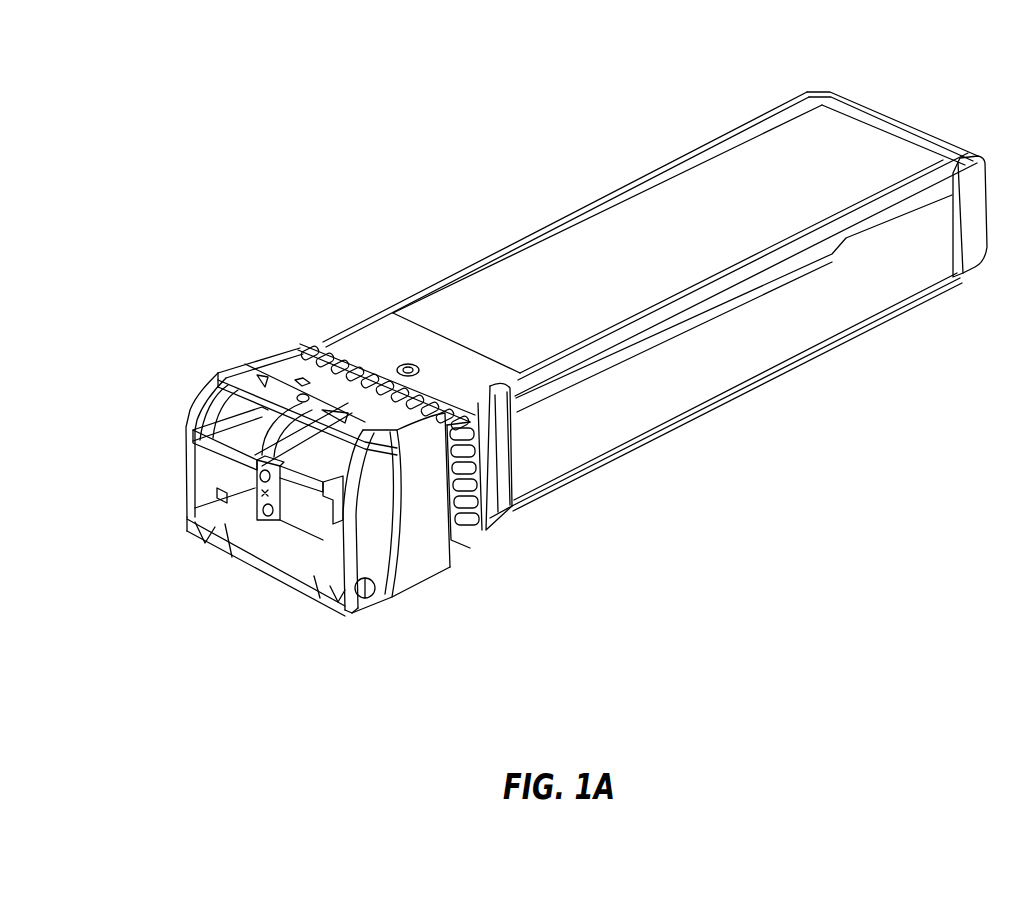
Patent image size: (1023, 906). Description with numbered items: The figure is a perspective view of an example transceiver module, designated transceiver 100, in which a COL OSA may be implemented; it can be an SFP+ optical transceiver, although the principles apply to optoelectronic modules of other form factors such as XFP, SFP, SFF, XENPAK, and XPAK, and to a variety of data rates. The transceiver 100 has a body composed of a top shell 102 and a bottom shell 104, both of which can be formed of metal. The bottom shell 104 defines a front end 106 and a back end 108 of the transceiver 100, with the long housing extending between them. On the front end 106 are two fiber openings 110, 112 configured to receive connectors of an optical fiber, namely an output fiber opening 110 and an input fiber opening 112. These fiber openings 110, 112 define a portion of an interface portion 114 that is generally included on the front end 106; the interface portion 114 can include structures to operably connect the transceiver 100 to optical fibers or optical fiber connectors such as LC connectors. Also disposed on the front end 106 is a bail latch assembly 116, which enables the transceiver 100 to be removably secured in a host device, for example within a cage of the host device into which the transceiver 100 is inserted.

The transceiver 100 is at (359, 156).
The top shell 102 is at (635, 245).
The bottom shell 104 is at (752, 352).
The front end 106 is at (219, 355).
The back end 108 is at (807, 80).
The output fiber opening 110 is at (232, 464).
The input fiber opening 112 is at (311, 500).
The interface portion 114 is at (424, 601).
The bail latch assembly 116 is at (367, 561).